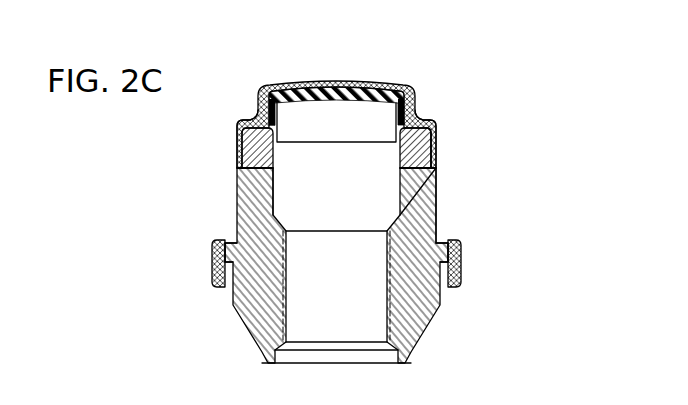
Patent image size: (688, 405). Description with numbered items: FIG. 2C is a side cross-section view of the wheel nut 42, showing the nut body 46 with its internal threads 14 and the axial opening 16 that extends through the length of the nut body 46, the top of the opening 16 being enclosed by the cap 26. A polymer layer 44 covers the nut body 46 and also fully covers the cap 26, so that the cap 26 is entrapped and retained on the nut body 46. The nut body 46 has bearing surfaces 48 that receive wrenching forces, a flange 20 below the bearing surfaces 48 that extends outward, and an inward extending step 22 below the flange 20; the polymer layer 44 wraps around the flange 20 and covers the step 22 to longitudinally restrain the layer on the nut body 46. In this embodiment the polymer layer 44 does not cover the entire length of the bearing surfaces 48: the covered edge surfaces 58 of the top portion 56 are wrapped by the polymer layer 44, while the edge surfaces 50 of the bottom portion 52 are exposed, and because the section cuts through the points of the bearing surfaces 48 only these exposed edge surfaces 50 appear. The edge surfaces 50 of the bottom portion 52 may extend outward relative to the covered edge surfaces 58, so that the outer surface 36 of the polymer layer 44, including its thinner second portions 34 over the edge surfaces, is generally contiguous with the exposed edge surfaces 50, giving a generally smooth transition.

The internal threads 14 is at (287, 318).
The axial opening 16 is at (342, 150).
The flange 20 is at (224, 258).
The inward extending step 22 is at (228, 266).
The cap 26 is at (291, 103).
The thinner second portions 34 is at (433, 142).
The outer surface 36 is at (238, 122).
The wheel nut 42 is at (404, 63).
The polymer layer 44 is at (428, 126).
The nut body 46 is at (418, 163).
The bearing surfaces 48 is at (256, 168).
The edge surfaces 50 is at (331, 265).
The bottom portion 52 is at (437, 228).
The top portion 56 is at (256, 148).
The covered edge surfaces 58 is at (241, 157).